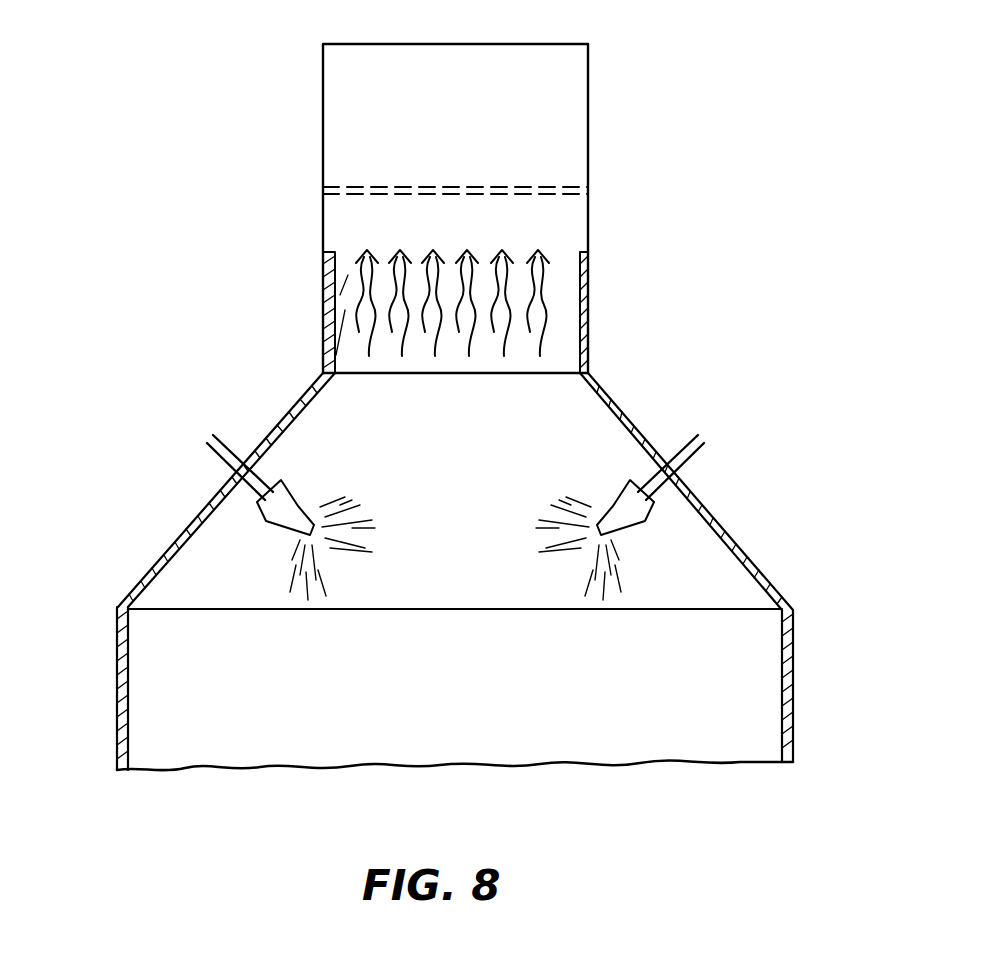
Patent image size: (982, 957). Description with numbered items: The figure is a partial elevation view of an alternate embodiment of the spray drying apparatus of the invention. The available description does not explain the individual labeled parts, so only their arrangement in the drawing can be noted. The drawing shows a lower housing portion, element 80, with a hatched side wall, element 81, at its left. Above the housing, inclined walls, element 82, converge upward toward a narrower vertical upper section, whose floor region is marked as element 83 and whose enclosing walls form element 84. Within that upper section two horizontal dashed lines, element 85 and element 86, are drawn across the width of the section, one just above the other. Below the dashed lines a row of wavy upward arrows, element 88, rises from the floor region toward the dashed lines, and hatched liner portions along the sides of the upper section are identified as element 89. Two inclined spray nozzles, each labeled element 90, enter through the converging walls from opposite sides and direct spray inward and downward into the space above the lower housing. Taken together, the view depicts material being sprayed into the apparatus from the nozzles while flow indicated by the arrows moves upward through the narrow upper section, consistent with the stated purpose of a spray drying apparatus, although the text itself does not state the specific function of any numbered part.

The lower housing 80 is at (795, 626).
The left wall of lower housing 81 is at (117, 700).
The slanted hopper wall 82 is at (278, 424).
The floor of upper chamber 83 is at (343, 376).
The upper chamber 84 is at (590, 88).
The upper dashed level line 85 is at (554, 188).
The lower dashed level line 86 is at (555, 198).
The upward flow arrows 88 is at (400, 254).
The hatched liner wall 89 is at (590, 295).
The spray nozzle 90 is at (266, 518).